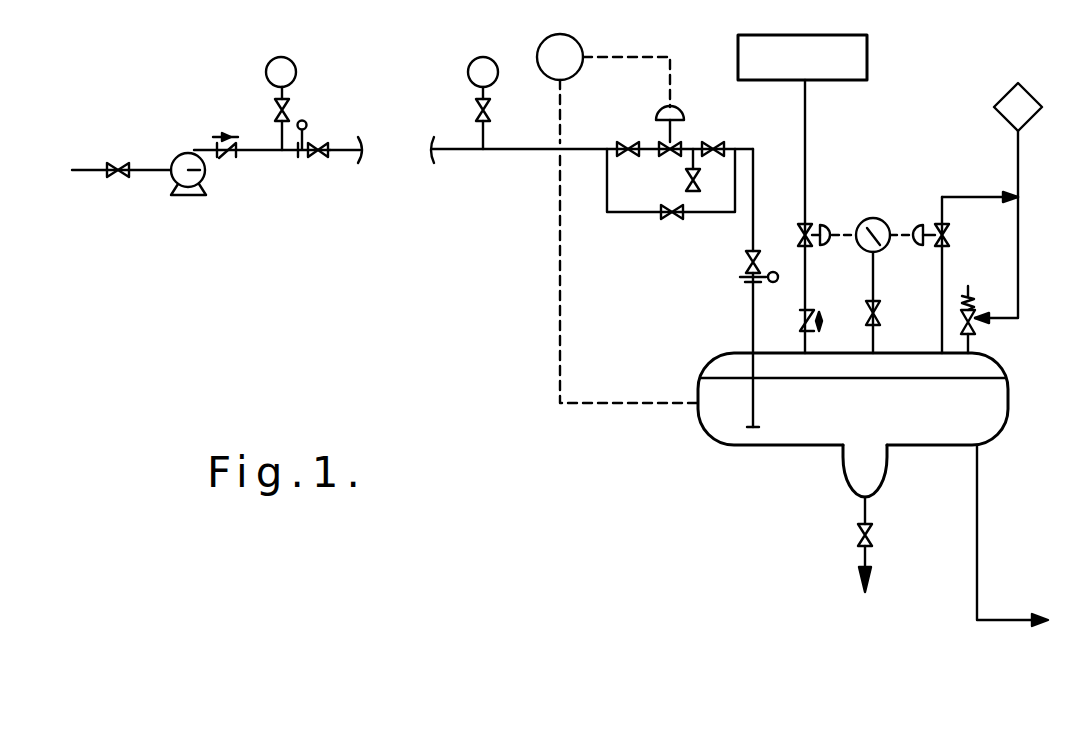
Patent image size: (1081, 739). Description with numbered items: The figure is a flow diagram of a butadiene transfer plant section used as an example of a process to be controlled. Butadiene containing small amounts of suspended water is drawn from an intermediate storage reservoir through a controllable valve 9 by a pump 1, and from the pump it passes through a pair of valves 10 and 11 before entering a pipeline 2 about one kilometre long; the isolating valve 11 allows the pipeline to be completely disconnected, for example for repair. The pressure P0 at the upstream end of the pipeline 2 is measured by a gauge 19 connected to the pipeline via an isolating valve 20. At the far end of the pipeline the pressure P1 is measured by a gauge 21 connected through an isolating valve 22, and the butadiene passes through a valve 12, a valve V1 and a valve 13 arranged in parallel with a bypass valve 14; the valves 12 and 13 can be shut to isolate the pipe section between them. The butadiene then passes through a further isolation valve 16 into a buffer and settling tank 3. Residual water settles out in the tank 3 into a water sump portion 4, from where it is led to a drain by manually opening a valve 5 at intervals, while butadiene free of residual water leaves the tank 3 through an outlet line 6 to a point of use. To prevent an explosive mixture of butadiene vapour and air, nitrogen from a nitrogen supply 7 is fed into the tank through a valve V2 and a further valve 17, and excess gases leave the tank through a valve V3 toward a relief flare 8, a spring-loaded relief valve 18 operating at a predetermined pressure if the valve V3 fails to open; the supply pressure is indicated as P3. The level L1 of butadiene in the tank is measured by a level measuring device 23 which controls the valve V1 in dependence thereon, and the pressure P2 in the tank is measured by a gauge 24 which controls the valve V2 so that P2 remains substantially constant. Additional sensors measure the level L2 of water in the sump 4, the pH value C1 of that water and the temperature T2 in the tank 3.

The pump 1 is at (187, 197).
The pipeline 2 is at (345, 157).
The buffer and settling tank 3 is at (780, 432).
The water sump portion 4 is at (880, 478).
The valve 5 is at (857, 535).
The outlet line 6 is at (980, 564).
The nitrogen supply 7 is at (870, 53).
The relief flare 8 is at (1018, 105).
The controllable valve 9 is at (118, 162).
The valve 10 is at (224, 156).
The isolating valve 11 is at (317, 147).
The valve 12 is at (630, 142).
The valve 13 is at (714, 145).
The bypass valve 14 is at (672, 219).
The isolation valve 16 is at (747, 260).
The valve 17 is at (802, 320).
The spring-loaded relief valve 18 is at (977, 325).
The gauge 19 is at (274, 60).
The isolating valve 20 is at (277, 109).
The gauge 21 is at (482, 72).
The isolating valve 22 is at (478, 110).
The level measuring device 23 is at (545, 41).
The gauge 24 is at (880, 246).
The valve V1 is at (672, 138).
The valve V2 is at (804, 230).
The valve V3 is at (940, 230).
The pressure at the upstream end of the pipeline P0 is at (277, 153).
The pressure at the downstream end of the pipeline P1 is at (482, 154).
The pressure in the tank P2 is at (878, 348).
The pressure line P3 is at (808, 118).
The level of butadiene in the tank L1 is at (728, 378).
The level of water in the sump L2 is at (843, 460).
The temperature in the tank T2 is at (1010, 388).
The pH value of the water C1 is at (857, 472).